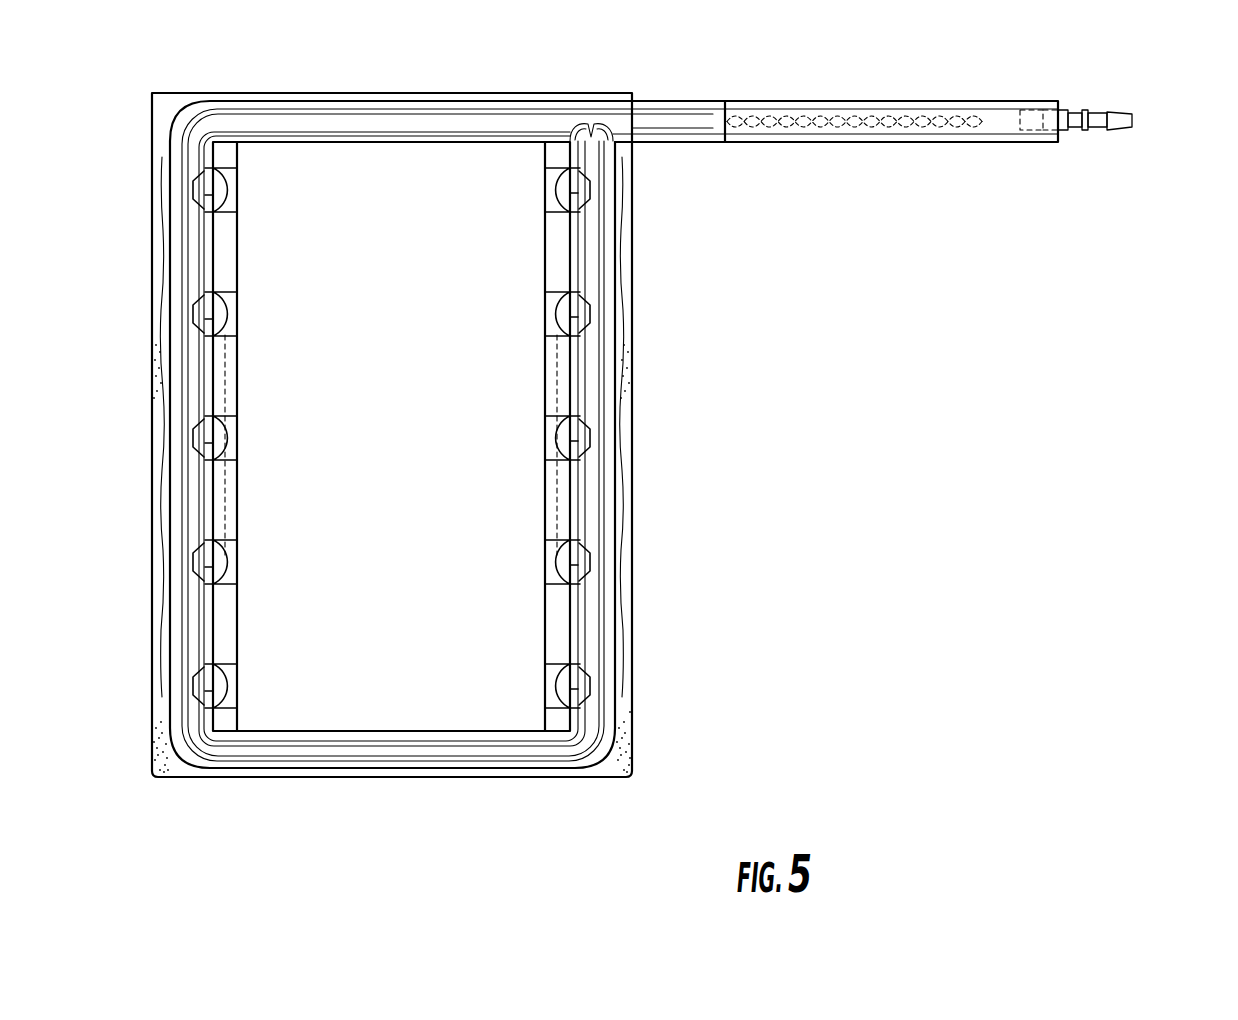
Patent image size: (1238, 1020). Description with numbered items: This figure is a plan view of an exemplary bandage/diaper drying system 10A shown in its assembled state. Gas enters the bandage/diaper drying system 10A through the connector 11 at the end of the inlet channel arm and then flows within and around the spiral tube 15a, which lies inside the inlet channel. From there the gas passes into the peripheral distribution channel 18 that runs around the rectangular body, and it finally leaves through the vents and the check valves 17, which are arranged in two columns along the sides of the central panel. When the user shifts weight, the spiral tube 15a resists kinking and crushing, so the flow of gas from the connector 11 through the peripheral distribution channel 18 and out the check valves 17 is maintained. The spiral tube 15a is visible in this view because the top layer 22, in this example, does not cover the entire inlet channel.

The bandage/diaper drying system 10A is at (945, 79).
The connector 11 is at (1133, 120).
The spiral tube 15a is at (818, 113).
The check valves 17 is at (216, 190).
The peripheral distribution channel 18 is at (190, 281).
The top layer 22 is at (624, 96).